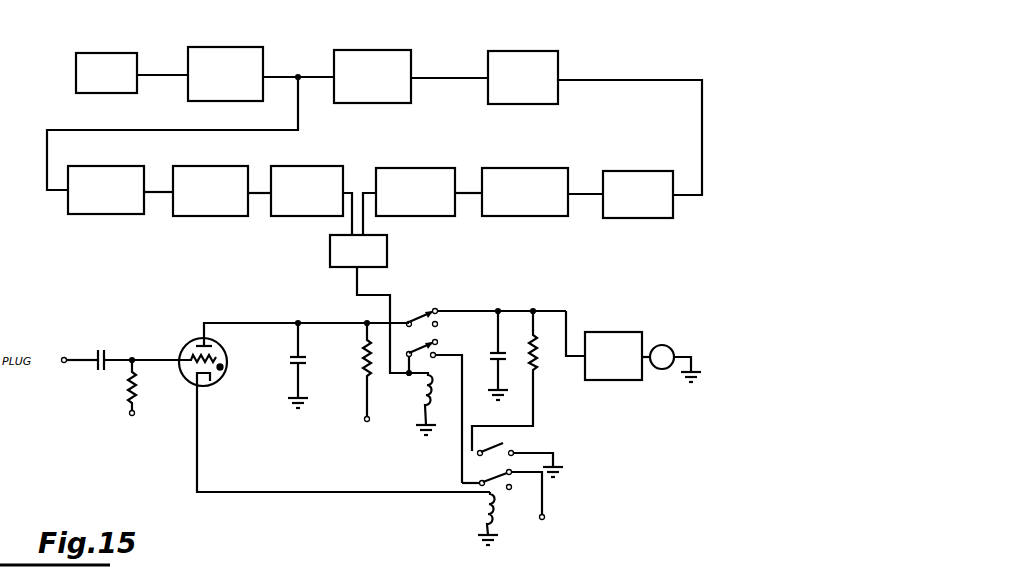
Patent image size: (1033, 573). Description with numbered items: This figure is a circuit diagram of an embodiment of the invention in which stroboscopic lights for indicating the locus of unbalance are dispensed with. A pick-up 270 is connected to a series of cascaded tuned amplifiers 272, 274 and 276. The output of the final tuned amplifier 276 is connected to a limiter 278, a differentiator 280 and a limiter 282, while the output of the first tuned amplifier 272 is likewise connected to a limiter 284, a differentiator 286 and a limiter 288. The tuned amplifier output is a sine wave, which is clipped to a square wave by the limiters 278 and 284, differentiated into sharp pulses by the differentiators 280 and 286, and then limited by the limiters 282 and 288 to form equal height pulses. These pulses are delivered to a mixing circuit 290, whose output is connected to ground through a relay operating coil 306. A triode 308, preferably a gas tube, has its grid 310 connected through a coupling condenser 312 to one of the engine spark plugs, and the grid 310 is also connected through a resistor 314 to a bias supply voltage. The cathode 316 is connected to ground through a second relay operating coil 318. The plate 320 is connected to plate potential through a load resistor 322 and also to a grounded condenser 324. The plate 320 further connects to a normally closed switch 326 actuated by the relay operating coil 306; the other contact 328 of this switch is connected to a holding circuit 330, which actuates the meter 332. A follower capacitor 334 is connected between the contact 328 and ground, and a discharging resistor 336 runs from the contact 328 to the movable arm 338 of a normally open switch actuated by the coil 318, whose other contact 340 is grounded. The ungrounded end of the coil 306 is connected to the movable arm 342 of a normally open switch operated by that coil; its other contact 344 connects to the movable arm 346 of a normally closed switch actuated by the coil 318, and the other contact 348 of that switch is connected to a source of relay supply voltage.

The pick-up 270 is at (102, 54).
The first tuned amplifier 272 is at (254, 38).
The tuned amplifier 274 is at (392, 50).
The final tuned amplifier 276 is at (547, 38).
The limiter 278 is at (650, 162).
The differentiator 280 is at (542, 158).
The limiter 282 is at (430, 158).
The limiter 284 is at (130, 156).
The differentiator 286 is at (222, 166).
The limiter 288 is at (313, 166).
The mixing circuit 290 is at (387, 248).
The relay operating coil 306 is at (422, 410).
The triode 308 is at (197, 338).
The grid 310 is at (190, 356).
The coupling condenser 312 is at (105, 349).
The resistor 314 is at (128, 393).
The cathode 316 is at (212, 384).
The second relay operating coil 318 is at (488, 516).
The plate 320 is at (214, 346).
The load resistor 322 is at (365, 374).
The grounded condenser 324 is at (306, 354).
The normally closed switch 326 is at (413, 311).
The contact 328 is at (437, 309).
The holding circuit 330 is at (616, 332).
The meter 332 is at (658, 370).
The follower capacitor 334 is at (501, 360).
The discharging resistor 336 is at (538, 366).
The movable arm 338 is at (504, 444).
The contact 340 is at (552, 453).
The movable arm 342 is at (425, 336).
The contact 344 is at (462, 347).
The movable arm 346 is at (500, 468).
The contact 348 is at (510, 490).